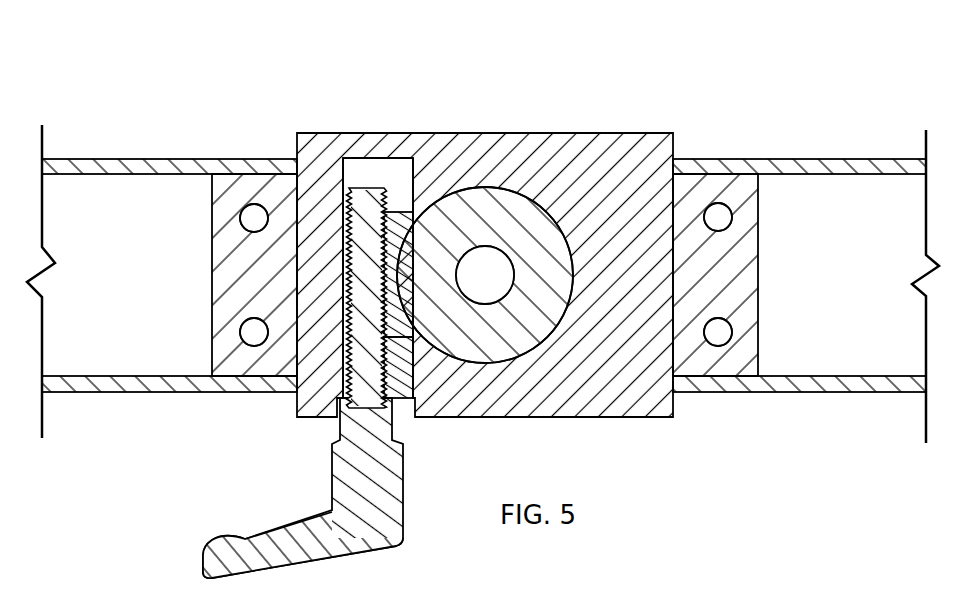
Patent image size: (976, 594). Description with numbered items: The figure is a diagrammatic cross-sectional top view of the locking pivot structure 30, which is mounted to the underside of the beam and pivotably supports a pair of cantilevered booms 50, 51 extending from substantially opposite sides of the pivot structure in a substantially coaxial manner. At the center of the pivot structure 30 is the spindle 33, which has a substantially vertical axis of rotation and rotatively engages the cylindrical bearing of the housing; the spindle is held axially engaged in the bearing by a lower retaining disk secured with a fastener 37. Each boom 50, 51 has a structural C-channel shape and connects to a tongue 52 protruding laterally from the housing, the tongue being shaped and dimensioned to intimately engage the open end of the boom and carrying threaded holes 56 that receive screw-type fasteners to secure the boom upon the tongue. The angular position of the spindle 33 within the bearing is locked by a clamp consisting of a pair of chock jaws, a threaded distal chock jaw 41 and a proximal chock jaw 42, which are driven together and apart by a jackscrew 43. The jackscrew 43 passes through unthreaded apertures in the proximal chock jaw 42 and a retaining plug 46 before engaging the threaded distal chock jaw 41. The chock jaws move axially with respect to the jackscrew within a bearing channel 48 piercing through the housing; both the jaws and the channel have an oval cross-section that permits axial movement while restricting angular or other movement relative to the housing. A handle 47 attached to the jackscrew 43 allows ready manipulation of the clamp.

The locking pivot structure 30 is at (694, 90).
The spindle 33 is at (556, 283).
The fastener 37 is at (472, 283).
The distal chock jaw 41 is at (396, 236).
The proximal chock jaw 42 is at (400, 323).
The jackscrew 43 is at (365, 242).
The retaining plug 46 is at (412, 378).
The handle 47 is at (202, 553).
The bearing channel 48 is at (377, 170).
The boom 50 is at (835, 166).
The boom 51 is at (105, 168).
The tongue 52 is at (212, 268).
The threaded holes 56 is at (240, 218).